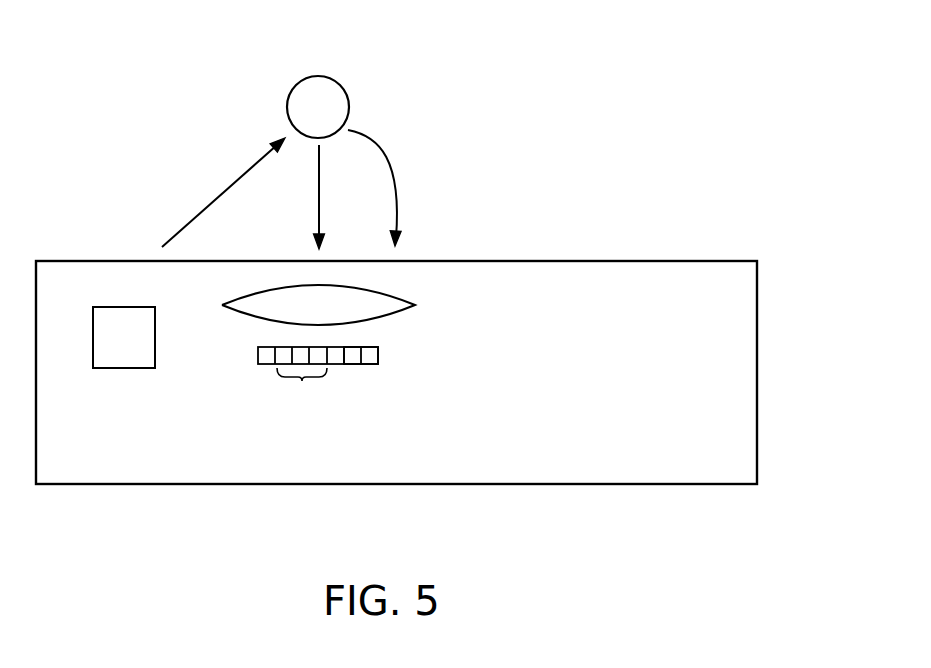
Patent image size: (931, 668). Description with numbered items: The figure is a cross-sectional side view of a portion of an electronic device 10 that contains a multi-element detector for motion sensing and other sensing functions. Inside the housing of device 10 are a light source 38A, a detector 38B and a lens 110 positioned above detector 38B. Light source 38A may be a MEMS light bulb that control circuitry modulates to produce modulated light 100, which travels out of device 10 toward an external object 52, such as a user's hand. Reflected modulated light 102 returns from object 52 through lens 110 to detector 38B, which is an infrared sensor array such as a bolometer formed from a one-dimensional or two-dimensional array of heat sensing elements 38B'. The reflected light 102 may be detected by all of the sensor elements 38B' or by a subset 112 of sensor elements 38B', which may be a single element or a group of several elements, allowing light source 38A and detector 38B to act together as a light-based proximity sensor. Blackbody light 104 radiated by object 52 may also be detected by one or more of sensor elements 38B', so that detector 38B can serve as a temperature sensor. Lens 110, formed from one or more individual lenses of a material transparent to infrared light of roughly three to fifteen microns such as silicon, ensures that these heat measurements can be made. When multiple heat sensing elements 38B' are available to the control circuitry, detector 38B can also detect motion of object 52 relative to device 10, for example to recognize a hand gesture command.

The electronic device 10 is at (758, 415).
The object 52 is at (325, 75).
The modulated light 100 is at (217, 196).
The reflected modulated light 102 is at (320, 196).
The blackbody light 104 is at (397, 173).
The light source 38A is at (119, 360).
The detector 38B is at (281, 390).
The heat sensing elements 38B' is at (402, 341).
The lens 110 is at (392, 303).
The subset of sensor elements 112 is at (304, 389).